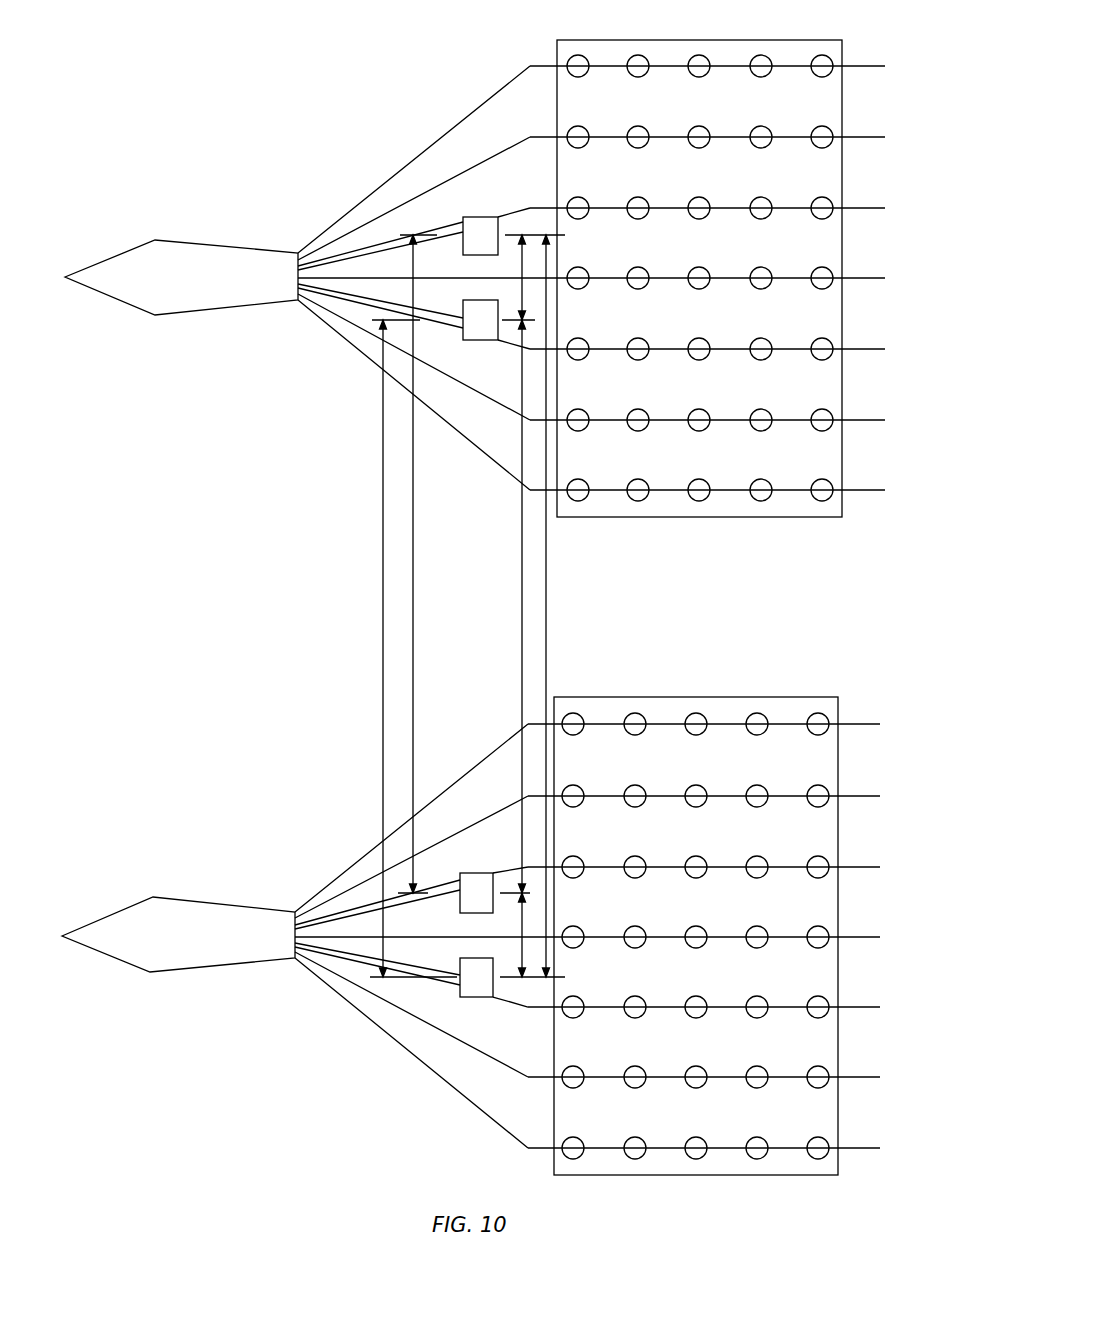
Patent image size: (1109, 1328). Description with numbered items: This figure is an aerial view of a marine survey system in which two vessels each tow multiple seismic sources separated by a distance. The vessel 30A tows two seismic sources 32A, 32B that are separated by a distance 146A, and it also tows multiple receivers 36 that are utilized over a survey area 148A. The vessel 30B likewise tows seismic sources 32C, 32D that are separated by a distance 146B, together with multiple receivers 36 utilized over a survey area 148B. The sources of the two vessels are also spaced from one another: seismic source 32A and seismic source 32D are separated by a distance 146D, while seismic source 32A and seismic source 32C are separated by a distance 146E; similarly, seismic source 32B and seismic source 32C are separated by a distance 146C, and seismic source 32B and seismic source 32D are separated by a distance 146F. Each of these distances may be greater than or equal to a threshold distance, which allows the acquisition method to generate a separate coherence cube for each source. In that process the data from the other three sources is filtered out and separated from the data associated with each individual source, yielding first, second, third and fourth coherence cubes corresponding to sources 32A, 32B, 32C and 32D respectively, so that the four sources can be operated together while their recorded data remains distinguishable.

The vessel 30A is at (155, 240).
The vessel 30B is at (153, 897).
The seismic source 32A is at (480, 217).
The seismic source 32B is at (478, 300).
The seismic source 32C is at (477, 873).
The seismic source 32D is at (477, 958).
The receivers 36 is at (578, 55).
The survey area 148A is at (700, 40).
The survey area 148B is at (700, 697).
The distance 146A is at (522, 316).
The distance 146B is at (522, 968).
The distance 146C is at (522, 608).
The distance 146D is at (546, 618).
The distance 146E is at (413, 582).
The distance 146F is at (383, 616).